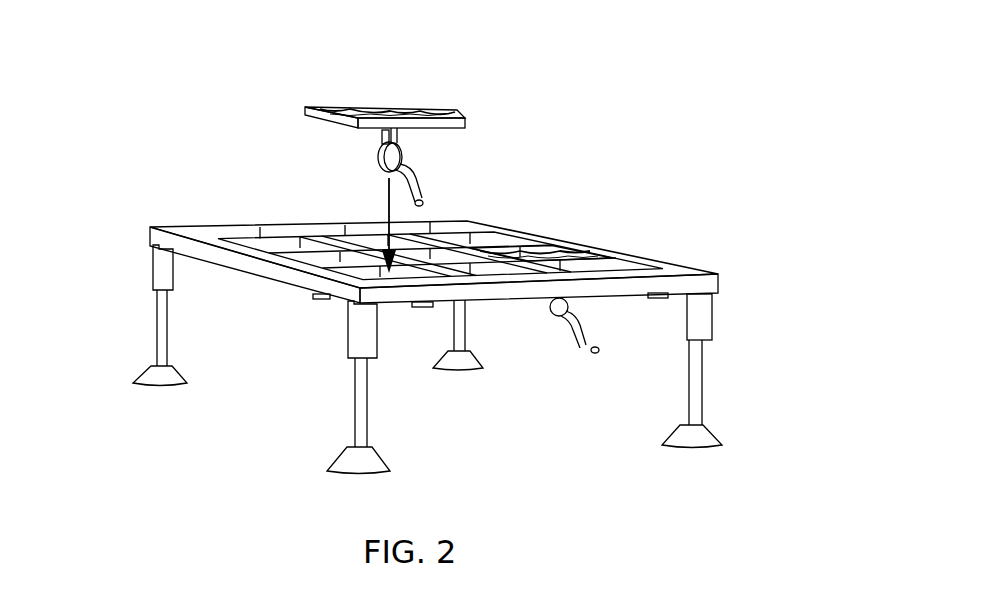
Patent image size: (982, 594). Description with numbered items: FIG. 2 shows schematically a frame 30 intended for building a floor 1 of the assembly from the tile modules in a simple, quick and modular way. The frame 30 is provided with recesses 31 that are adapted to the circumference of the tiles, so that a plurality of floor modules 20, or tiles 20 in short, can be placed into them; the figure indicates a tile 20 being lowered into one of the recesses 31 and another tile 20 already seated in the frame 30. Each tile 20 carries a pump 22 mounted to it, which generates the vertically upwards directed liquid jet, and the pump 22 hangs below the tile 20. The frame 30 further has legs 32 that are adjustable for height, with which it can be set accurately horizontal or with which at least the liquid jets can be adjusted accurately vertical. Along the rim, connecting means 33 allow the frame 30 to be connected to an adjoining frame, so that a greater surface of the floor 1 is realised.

The floor 1 is at (226, 90).
The floor module 20 is at (393, 98).
The pump 22 is at (401, 156).
The frame 30 is at (196, 220).
The recesses 31 is at (272, 247).
The leg 32 is at (158, 277).
The connecting means 33 is at (311, 302).